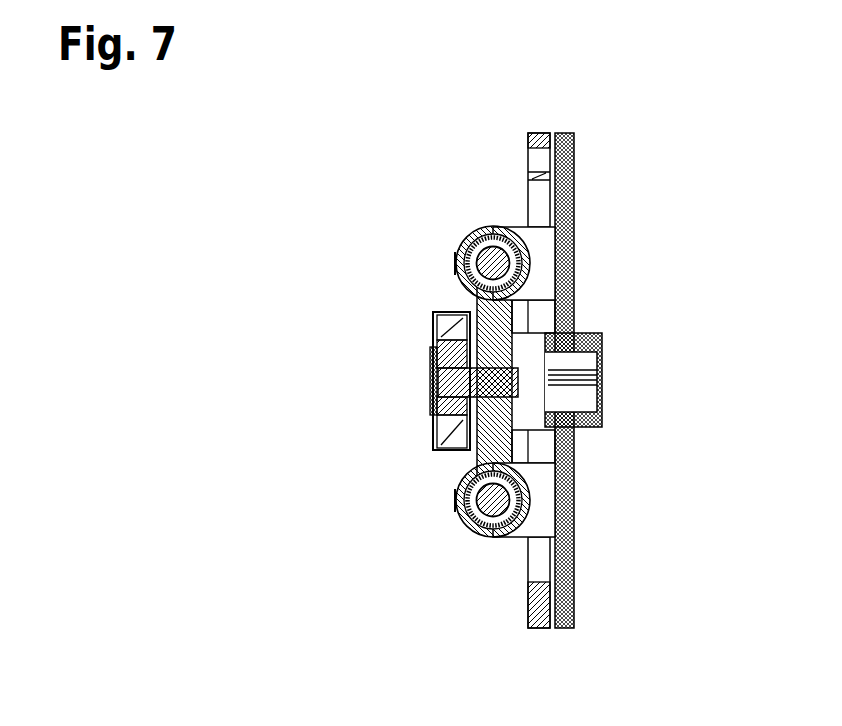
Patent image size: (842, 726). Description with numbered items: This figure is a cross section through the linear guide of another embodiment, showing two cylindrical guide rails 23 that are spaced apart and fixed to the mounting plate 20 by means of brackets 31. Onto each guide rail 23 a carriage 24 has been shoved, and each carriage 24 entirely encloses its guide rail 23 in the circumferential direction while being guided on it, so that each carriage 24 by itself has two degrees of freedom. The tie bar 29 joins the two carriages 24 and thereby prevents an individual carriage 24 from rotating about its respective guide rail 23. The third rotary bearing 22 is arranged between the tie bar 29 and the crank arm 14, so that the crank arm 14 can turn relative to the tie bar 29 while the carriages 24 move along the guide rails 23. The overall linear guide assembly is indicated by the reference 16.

The crank arm 14 is at (437, 442).
The adjusting device 16 is at (440, 192).
The mounting plate 20 is at (575, 195).
The third rotary bearing 22 is at (437, 333).
The cylindrical guide rail 23 is at (478, 227).
The carriage 24 is at (453, 258).
The tie bar 29 is at (475, 307).
The bracket 31 is at (542, 275).